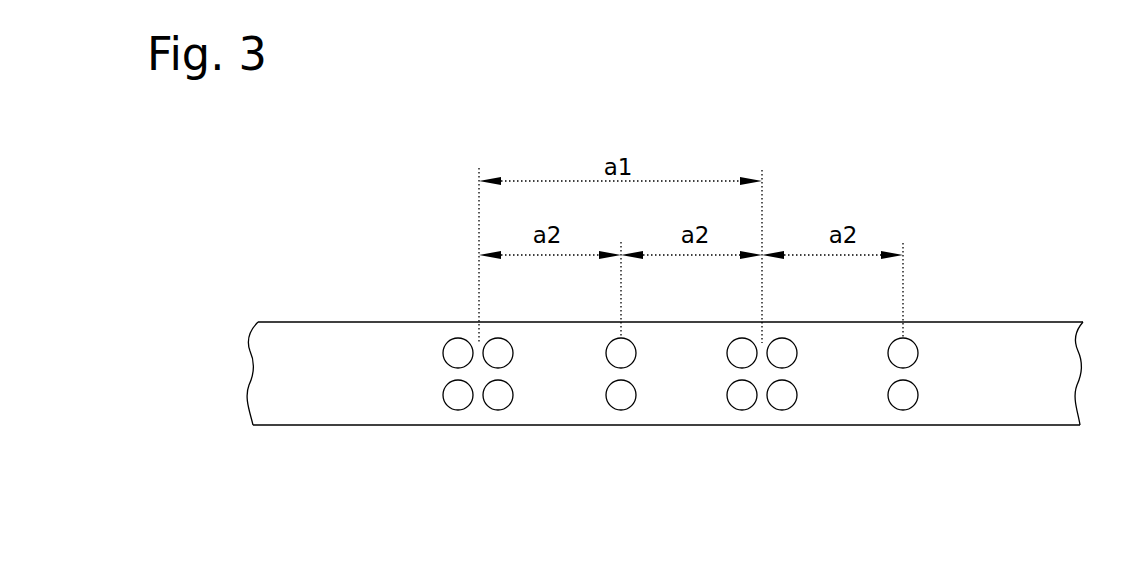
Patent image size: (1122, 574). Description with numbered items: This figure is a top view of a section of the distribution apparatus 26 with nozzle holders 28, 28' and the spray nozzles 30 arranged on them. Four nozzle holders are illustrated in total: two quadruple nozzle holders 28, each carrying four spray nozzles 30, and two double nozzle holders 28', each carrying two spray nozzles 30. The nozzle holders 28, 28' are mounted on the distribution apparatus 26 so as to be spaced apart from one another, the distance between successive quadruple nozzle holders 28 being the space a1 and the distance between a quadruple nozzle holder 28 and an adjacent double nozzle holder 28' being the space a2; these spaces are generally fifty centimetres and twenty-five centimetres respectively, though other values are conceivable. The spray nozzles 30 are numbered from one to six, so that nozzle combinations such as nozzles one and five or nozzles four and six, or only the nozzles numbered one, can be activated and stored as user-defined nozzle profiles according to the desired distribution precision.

The distribution apparatus 26 is at (309, 284).
The quadruple nozzle holder 28 is at (459, 434).
The double nozzle holder 28' is at (620, 433).
The spray nozzles 30 is at (822, 374).